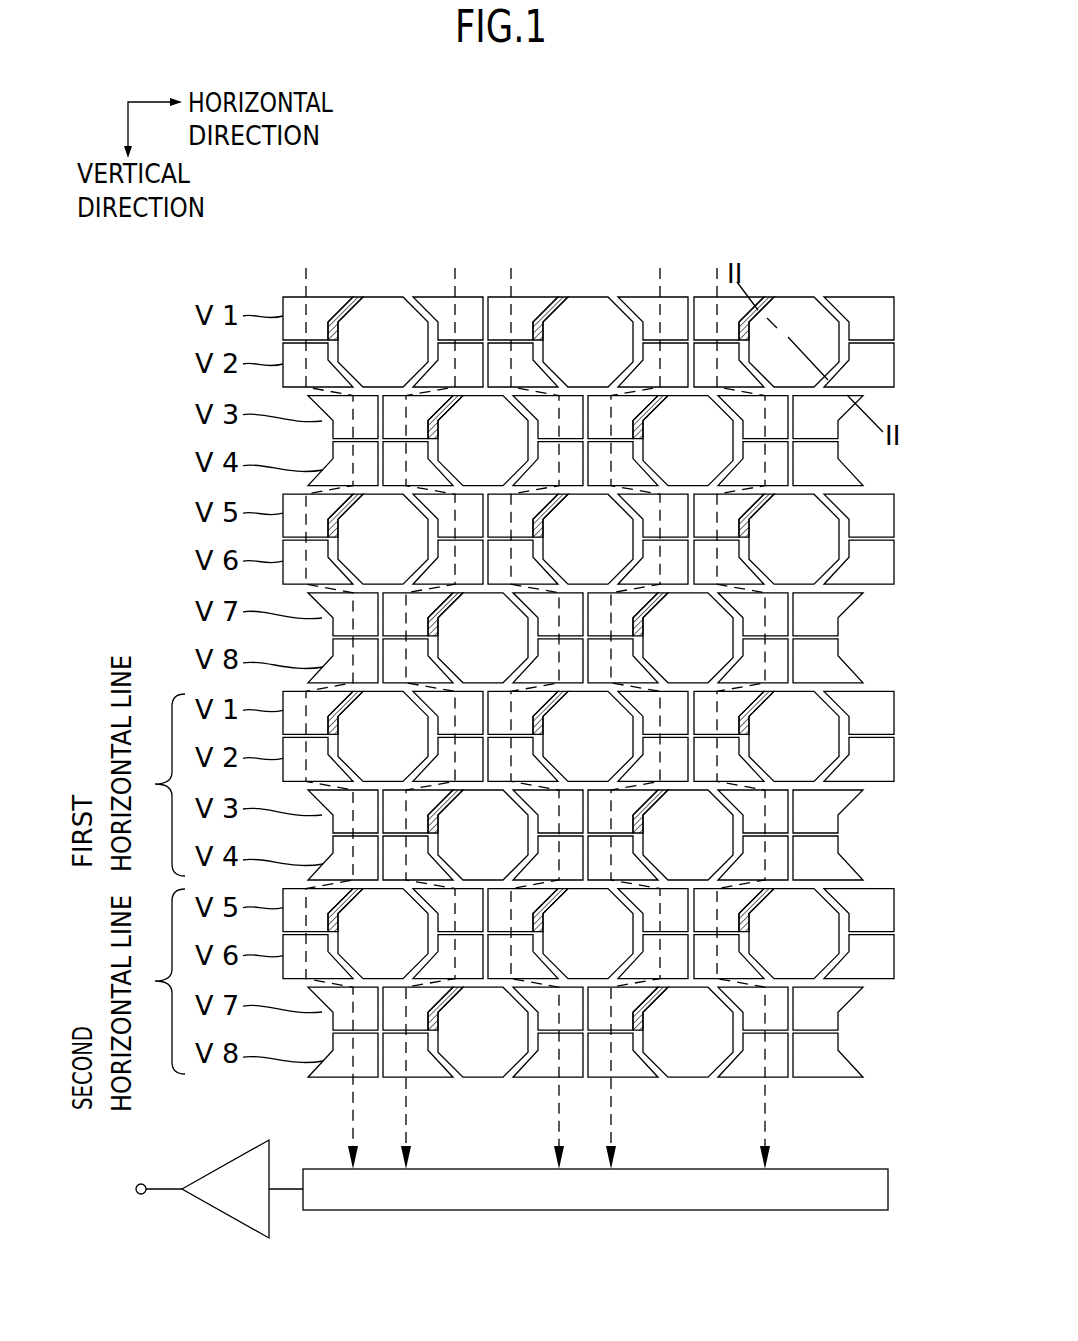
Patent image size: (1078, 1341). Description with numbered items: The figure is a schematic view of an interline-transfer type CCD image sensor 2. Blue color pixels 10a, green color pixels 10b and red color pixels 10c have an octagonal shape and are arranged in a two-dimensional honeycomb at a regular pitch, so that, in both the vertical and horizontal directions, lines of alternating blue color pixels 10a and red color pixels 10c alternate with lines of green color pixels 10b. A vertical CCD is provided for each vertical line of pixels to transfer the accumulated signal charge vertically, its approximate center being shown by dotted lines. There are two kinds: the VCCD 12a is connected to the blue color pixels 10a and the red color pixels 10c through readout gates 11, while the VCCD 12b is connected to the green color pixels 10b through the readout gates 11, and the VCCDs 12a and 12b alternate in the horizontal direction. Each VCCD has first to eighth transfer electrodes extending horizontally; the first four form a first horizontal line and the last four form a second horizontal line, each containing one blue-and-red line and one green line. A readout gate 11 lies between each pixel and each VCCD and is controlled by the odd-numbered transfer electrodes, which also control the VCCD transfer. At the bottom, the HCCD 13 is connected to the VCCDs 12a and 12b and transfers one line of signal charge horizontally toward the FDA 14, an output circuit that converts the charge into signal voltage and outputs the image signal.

The CCD image sensor 2 is at (764, 142).
The blue color pixel 10a is at (387, 297).
The green color pixel 10b is at (690, 1078).
The red color pixel 10c is at (603, 297).
The readout gate 11 is at (345, 297).
The VCCD 12a is at (306, 275).
The VCCD 12b is at (455, 276).
The HCCD 13 is at (710, 1211).
The FDA 14 is at (228, 1216).